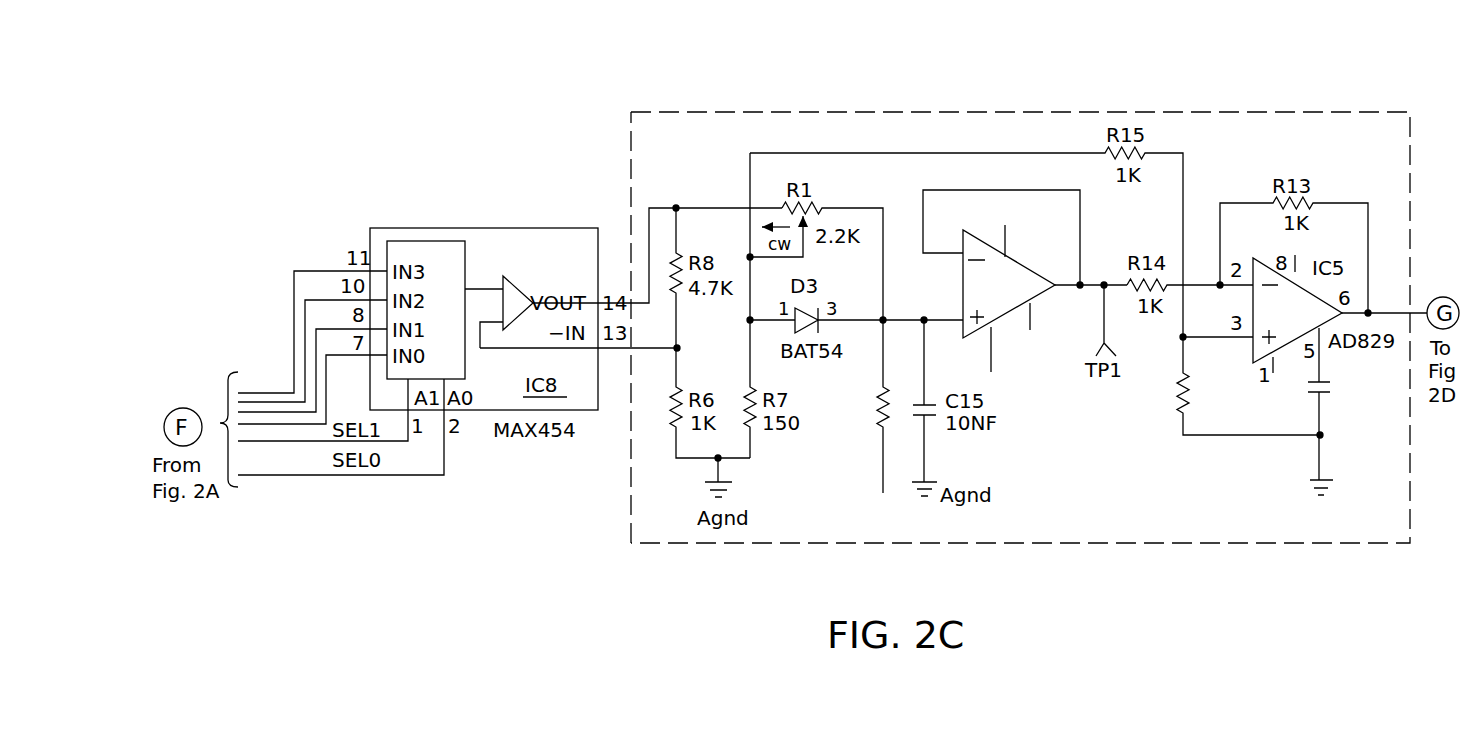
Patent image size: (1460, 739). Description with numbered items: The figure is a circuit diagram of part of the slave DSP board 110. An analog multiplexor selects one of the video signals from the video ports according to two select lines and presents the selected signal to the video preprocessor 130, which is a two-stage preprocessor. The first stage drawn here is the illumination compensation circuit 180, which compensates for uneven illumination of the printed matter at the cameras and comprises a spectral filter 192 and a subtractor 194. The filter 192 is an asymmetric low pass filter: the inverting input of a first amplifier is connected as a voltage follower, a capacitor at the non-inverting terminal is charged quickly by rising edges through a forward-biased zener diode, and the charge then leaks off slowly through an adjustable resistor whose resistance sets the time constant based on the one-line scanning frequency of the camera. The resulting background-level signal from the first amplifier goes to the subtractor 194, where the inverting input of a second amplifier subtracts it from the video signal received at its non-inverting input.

The slave DSP board 110 is at (1130, 98).
The video preprocessor 130 is at (631, 502).
The illumination compensation circuit 180 is at (1072, 503).
The spectral filter 192 is at (858, 465).
The subtractor 194 is at (1220, 452).